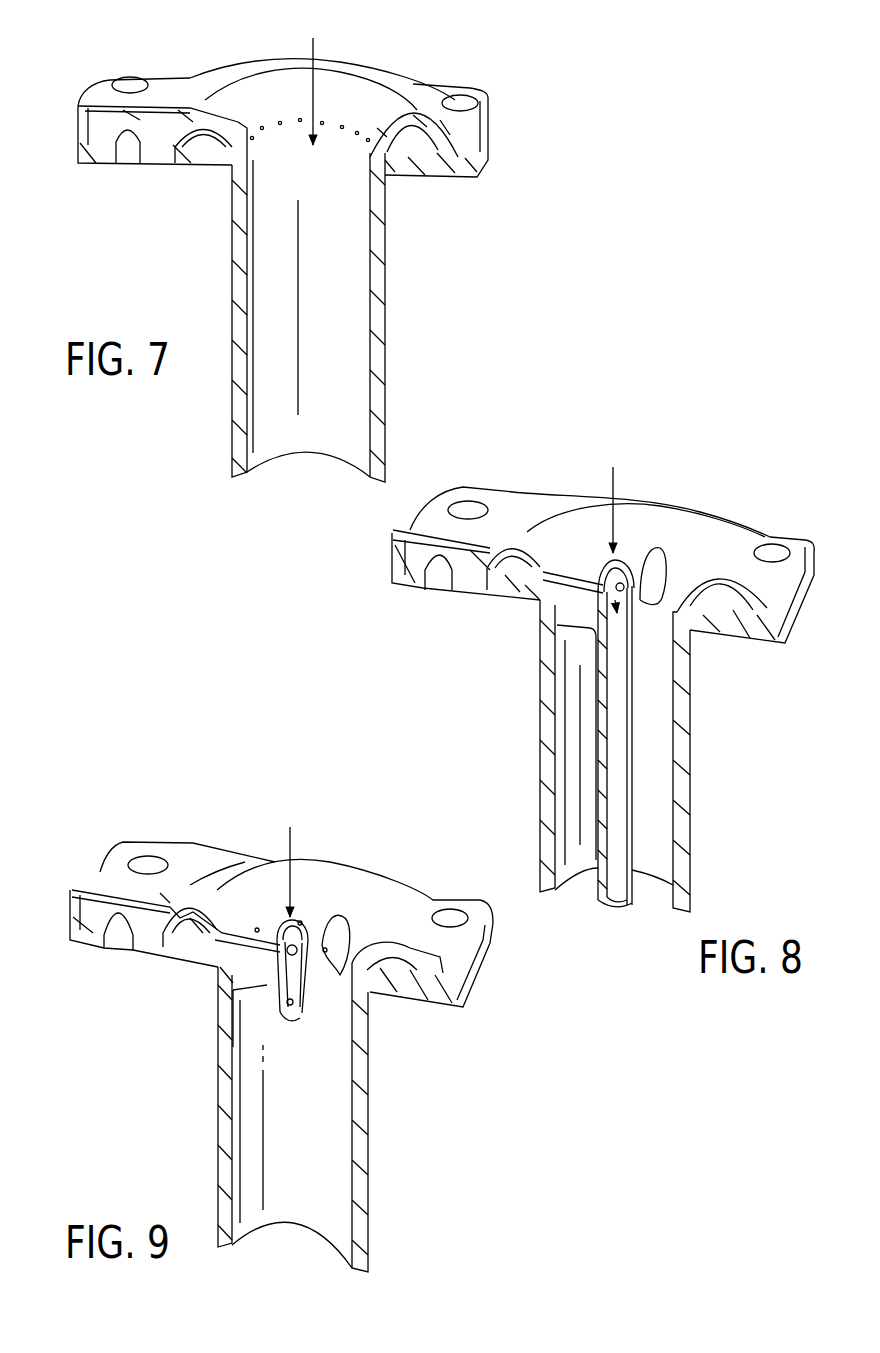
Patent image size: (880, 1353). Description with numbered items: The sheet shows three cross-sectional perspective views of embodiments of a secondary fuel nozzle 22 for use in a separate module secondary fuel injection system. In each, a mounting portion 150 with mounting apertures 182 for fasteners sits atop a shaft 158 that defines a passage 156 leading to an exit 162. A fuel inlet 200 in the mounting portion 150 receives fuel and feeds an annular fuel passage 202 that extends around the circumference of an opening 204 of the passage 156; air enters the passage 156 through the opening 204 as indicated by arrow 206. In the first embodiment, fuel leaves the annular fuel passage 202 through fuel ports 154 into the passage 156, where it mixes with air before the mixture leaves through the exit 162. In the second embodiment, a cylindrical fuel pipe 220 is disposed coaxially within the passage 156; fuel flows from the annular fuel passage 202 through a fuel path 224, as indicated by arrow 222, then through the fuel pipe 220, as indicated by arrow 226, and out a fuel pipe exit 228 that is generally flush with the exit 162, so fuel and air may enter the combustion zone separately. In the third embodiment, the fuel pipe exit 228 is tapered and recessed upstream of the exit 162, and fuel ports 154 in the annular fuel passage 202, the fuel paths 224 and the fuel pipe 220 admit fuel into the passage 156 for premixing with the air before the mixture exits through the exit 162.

In FIG. 7, the secondary fuel nozzle 22 is at (80, 79).
In FIG. 8, the secondary fuel nozzle 22 is at (793, 507).
In FIG. 9, the secondary fuel nozzle 22 is at (100, 813).
In FIG. 7, the mounting portion 150 is at (178, 87).
In FIG. 8, the mounting portion 150 is at (510, 505).
In FIG. 9, the mounting portion 150 is at (193, 868).
In FIG. 7, the fuel ports 154 is at (280, 123).
In FIG. 9, the fuel ports 154 is at (325, 948).
In FIG. 7, the passage 156 is at (335, 288).
In FIG. 8, the passage 156 is at (657, 747).
In FIG. 9, the passage 156 is at (308, 1125).
In FIG. 7, the shaft 158 is at (378, 272).
In FIG. 8, the shaft 158 is at (680, 732).
In FIG. 9, the shaft 158 is at (358, 1105).
In FIG. 7, the exit 162 is at (298, 475).
In FIG. 8, the exit 162 is at (588, 887).
In FIG. 9, the exit 162 is at (297, 1240).
In FIG. 7, the mounting apertures 182 is at (131, 82).
In FIG. 8, the mounting apertures 182 is at (470, 500).
In FIG. 9, the mounting apertures 182 is at (150, 862).
In FIG. 7, the fuel inlet 200 is at (126, 147).
In FIG. 8, the fuel inlet 200 is at (438, 568).
In FIG. 9, the fuel inlet 200 is at (120, 933).
In FIG. 7, the annular fuel passage 202 is at (202, 137).
In FIG. 8, the annular fuel passage 202 is at (510, 573).
In FIG. 9, the annular fuel passage 202 is at (198, 935).
In FIG. 7, the opening 204 is at (338, 150).
In FIG. 8, the opening 204 is at (650, 630).
In FIG. 9, the opening 204 is at (328, 990).
In FIG. 7, the arrow 206 is at (313, 38).
In FIG. 8, the arrow 206 is at (613, 467).
In FIG. 9, the arrow 206 is at (292, 837).
In FIG. 8, the fuel pipe 220 is at (632, 843).
In FIG. 9, the fuel pipe 220 is at (310, 1013).
In FIG. 8, the arrow 222 is at (548, 625).
In FIG. 8, the fuel path 224 is at (582, 575).
In FIG. 9, the fuel path 224 is at (253, 933).
In FIG. 8, the arrow 226 is at (617, 740).
In FIG. 8, the fuel pipe exit 228 is at (613, 902).
In FIG. 9, the fuel pipe exit 228 is at (293, 1023).